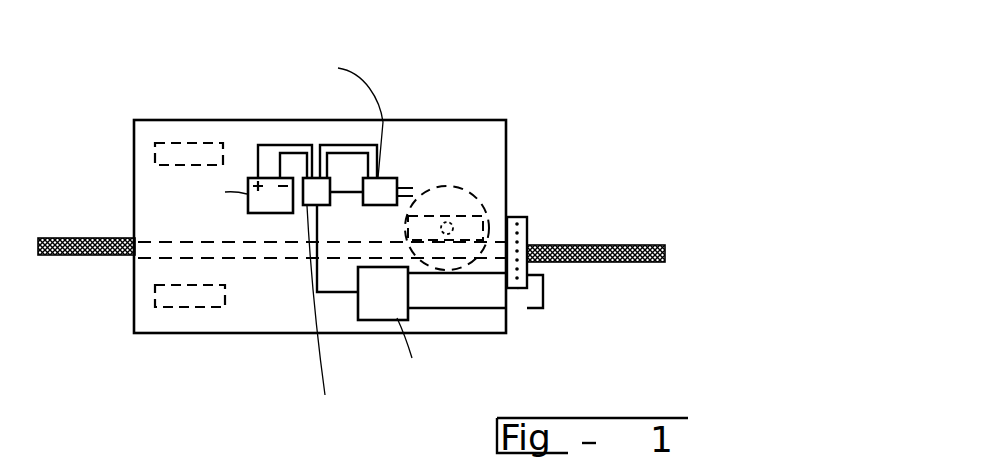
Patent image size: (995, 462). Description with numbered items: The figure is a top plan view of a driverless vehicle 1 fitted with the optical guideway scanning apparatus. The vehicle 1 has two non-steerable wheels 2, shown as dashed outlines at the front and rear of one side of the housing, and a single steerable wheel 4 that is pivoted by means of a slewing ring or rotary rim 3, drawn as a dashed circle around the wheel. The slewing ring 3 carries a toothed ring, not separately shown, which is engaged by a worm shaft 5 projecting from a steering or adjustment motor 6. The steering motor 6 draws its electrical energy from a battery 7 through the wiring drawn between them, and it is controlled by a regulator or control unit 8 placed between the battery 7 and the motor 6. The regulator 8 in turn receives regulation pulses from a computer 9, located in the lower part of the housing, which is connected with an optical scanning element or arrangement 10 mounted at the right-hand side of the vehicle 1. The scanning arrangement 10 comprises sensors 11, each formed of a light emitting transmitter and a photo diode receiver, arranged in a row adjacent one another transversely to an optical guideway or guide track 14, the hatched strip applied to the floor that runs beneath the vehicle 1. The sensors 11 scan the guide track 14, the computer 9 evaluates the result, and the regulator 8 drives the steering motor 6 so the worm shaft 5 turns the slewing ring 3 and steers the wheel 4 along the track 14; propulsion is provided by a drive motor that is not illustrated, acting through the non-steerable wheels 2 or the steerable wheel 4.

The vehicle 1 is at (463, 131).
The non-steerable wheels 2 is at (178, 146).
The slewing ring 3 is at (477, 198).
The steerable wheel 4 is at (478, 218).
The worm shaft 5 is at (415, 189).
The steering motor 6 is at (383, 188).
The battery 7 is at (270, 203).
The regulator 8 is at (311, 204).
The computer 9 is at (377, 302).
The optical scanning arrangement 10 is at (535, 223).
The sensors 11 is at (516, 288).
The optical guideway 14 is at (633, 243).